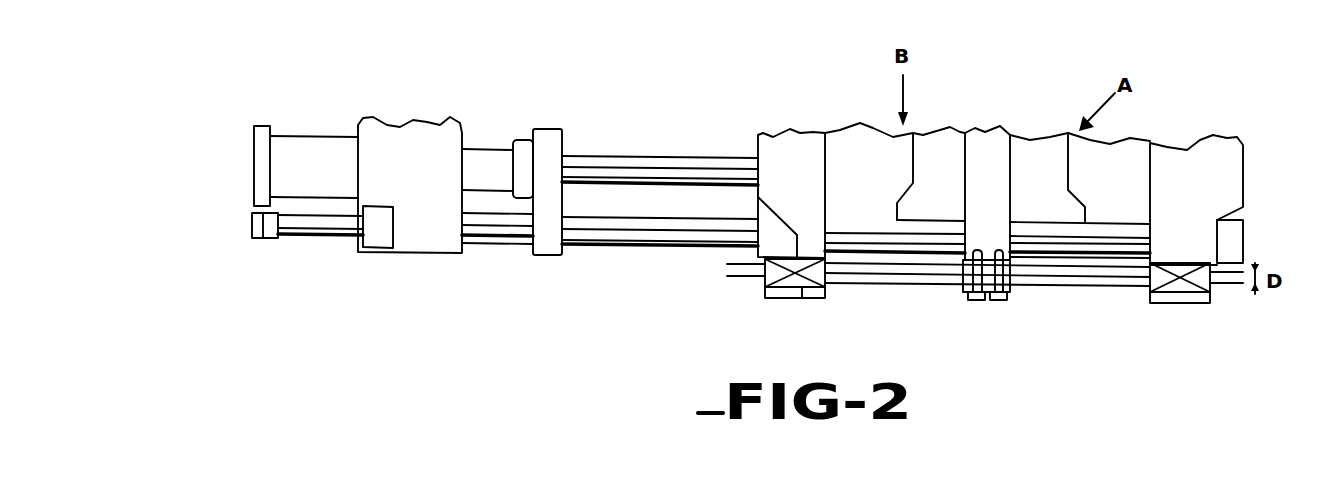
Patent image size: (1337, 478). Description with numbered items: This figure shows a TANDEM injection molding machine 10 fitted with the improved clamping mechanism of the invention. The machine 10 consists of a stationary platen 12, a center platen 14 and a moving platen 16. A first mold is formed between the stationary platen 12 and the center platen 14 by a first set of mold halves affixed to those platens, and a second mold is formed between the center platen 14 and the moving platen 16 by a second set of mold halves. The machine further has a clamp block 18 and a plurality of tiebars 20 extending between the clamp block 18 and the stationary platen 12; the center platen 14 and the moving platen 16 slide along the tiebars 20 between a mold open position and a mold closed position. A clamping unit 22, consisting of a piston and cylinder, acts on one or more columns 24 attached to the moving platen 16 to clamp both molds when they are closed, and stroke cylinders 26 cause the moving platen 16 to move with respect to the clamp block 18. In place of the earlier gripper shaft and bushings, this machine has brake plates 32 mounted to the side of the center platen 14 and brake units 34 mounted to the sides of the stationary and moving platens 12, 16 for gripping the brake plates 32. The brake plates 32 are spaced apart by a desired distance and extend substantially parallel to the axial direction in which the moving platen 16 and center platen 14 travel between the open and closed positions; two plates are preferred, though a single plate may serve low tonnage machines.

The injection molding machine 10 is at (1077, 87).
The stationary platen 12 is at (1227, 158).
The center platen 14 is at (989, 147).
The moving platen 16 is at (808, 186).
The clamp block 18 is at (415, 243).
The tiebars 20 is at (636, 236).
The clamping unit 22 is at (300, 185).
The columns 24 is at (682, 178).
The stroke cylinders 26 is at (333, 238).
The brake plates 32 is at (920, 270).
The brake units 34 is at (800, 300).